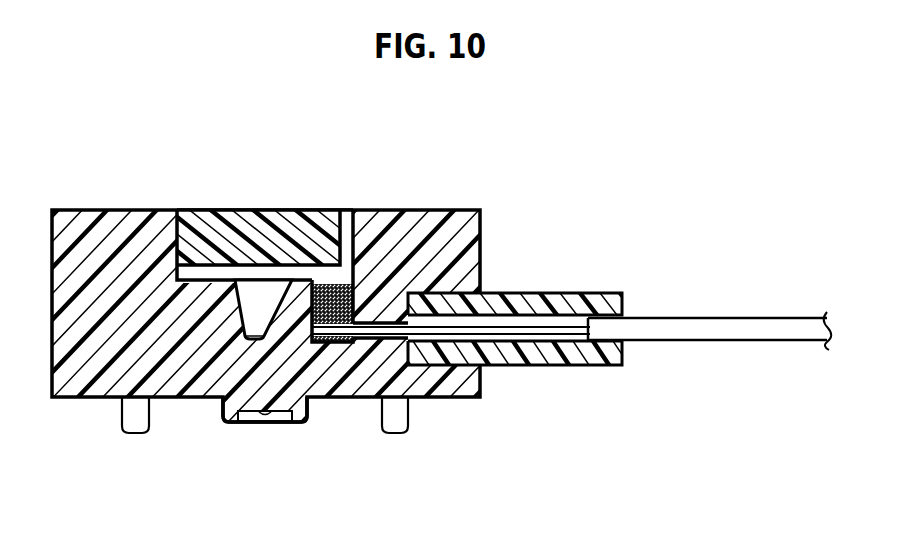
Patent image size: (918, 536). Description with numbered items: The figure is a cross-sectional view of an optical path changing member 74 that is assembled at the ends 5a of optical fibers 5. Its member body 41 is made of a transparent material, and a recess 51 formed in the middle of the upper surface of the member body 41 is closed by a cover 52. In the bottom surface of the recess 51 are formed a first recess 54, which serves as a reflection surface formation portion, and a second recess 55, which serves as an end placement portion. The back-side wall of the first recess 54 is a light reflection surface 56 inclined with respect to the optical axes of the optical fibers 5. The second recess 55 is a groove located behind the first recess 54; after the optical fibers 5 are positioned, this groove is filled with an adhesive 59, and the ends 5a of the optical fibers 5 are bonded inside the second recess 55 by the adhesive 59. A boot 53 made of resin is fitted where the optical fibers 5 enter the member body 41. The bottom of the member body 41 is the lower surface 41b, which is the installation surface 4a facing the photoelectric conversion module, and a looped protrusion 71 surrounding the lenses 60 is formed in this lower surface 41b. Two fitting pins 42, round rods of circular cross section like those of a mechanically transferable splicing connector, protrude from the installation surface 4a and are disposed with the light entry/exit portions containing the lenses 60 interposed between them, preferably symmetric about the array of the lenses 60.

The optical path changing member 74 is at (496, 178).
The member body 41 is at (472, 235).
The lower surface 41b is at (443, 398).
The installation surface 4a is at (82, 398).
The fitting pins 42 is at (397, 470).
The recess 51 is at (197, 272).
The cover 52 is at (214, 225).
The first recess 54 is at (248, 293).
The light reflection surface 56 is at (268, 325).
The second recess 55 is at (325, 283).
The adhesive 59 is at (356, 297).
The boot 53 is at (553, 368).
The optical fibers 5 is at (712, 340).
The ends of optical fibers 5a is at (335, 342).
The lenses 60 is at (265, 421).
The looped protrusion 71 is at (226, 424).